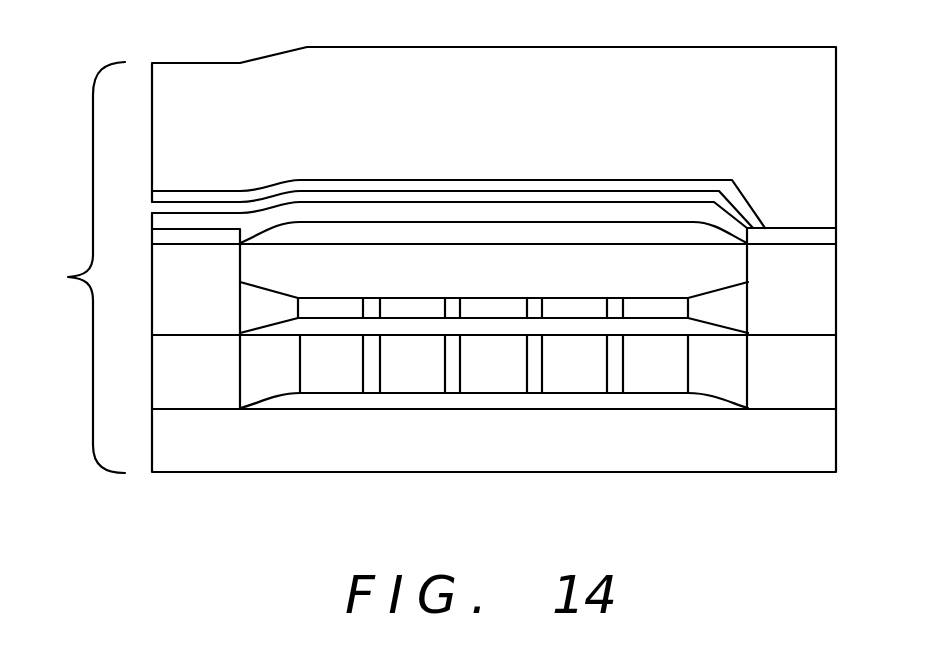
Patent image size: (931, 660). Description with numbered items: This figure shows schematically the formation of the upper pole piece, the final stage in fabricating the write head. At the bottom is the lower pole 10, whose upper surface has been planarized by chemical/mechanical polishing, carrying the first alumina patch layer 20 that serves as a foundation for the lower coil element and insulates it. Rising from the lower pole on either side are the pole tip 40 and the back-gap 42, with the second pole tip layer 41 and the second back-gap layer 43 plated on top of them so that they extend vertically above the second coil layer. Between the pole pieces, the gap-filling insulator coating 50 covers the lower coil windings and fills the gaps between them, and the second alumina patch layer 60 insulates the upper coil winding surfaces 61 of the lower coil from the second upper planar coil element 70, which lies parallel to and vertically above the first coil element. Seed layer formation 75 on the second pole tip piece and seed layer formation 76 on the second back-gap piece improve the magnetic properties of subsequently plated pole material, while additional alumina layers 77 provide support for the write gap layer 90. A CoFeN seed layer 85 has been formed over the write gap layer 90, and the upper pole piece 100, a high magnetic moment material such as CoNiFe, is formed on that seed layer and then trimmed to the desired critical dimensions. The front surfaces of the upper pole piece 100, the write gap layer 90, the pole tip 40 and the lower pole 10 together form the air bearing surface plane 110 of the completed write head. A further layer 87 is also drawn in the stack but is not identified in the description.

The lower pole 10 is at (173, 440).
The first alumina patch layer 20 is at (715, 405).
The pole tip 40 is at (180, 366).
The second pole tip layer 41 is at (180, 297).
The back-gap 42 is at (810, 362).
The second back-gap layer 43 is at (820, 293).
The gap-filling insulator coating 50 is at (265, 378).
The second alumina patch layer 60 is at (638, 328).
The upper coil winding surfaces of the lower coil 61 is at (321, 336).
The second upper planar coil element 70 is at (725, 307).
The seed layer formation on second pole tip piece 75 is at (180, 231).
The seed layer formation on second back-gap piece 76 is at (820, 235).
The additional alumina layers 77 is at (398, 235).
The seed layer 85 is at (338, 267).
The conductive layer 87 is at (220, 197).
The write gap layer 90 is at (183, 207).
The upper pole piece 100 is at (803, 127).
The air bearing surface plane 110 is at (74, 267).